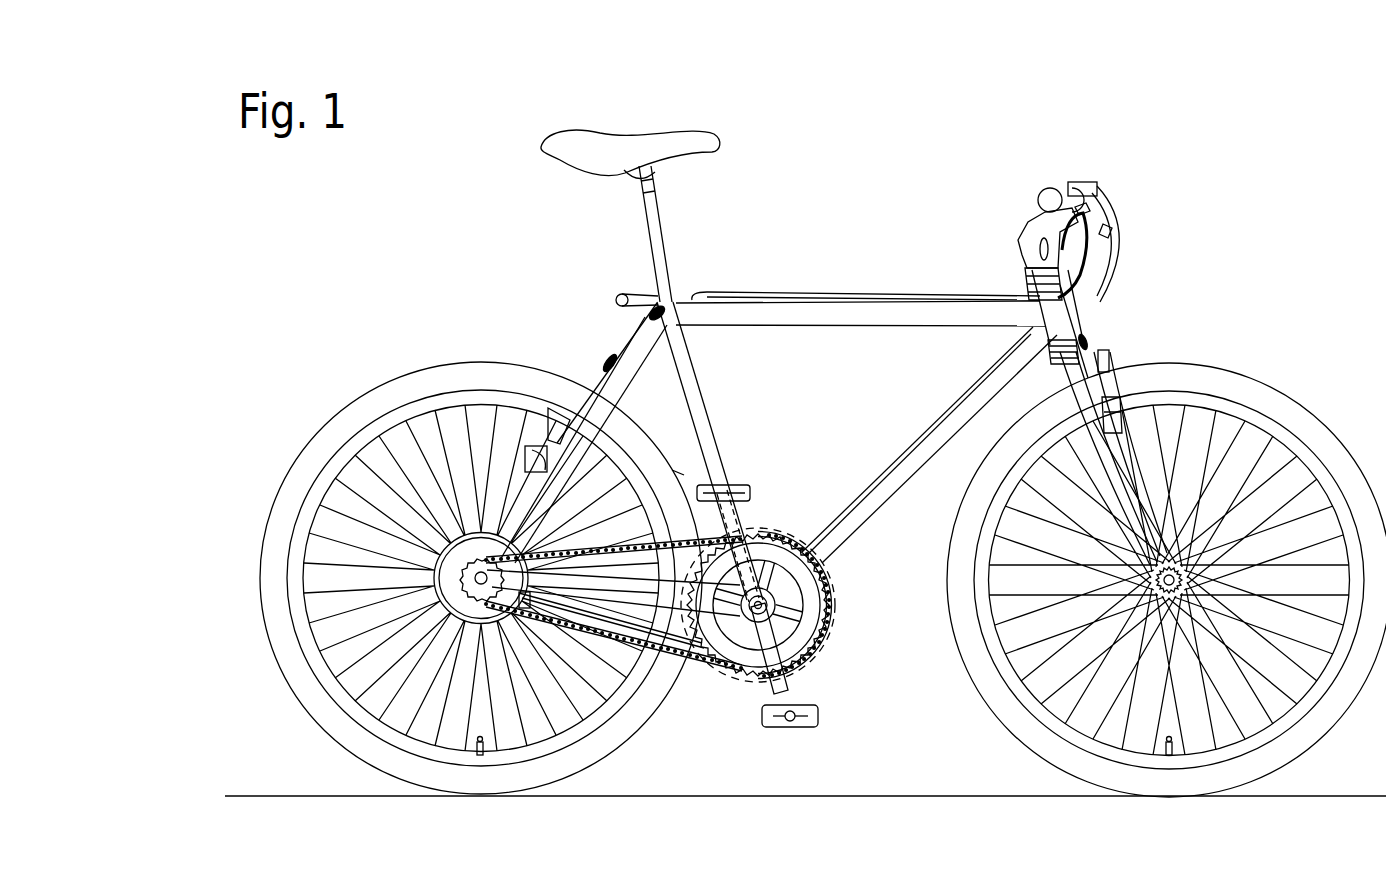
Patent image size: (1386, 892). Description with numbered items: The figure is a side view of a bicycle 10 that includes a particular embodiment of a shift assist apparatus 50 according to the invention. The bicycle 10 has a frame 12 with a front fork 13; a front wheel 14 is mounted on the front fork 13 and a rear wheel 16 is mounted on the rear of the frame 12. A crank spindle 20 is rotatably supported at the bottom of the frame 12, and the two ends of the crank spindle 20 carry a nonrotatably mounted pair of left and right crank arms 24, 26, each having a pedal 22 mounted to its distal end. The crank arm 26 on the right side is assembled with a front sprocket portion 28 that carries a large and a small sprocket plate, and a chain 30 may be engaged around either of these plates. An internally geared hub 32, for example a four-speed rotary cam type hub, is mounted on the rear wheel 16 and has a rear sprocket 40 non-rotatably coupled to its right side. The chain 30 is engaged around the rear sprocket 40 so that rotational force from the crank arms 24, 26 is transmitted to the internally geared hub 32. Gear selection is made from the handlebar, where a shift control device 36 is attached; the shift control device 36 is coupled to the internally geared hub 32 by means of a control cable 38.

The bicycle 10 is at (848, 230).
The frame 12 is at (927, 288).
The front fork 13 is at (1105, 370).
The front wheel 14 is at (1300, 415).
The rear wheel 16 is at (345, 410).
The crank spindle 20 is at (795, 552).
The pedal 22 is at (808, 717).
The left crank arm 24 is at (746, 520).
The right crank arm 26 is at (757, 674).
The front sprocket portion 28 is at (697, 672).
The chain 30 is at (676, 478).
The internally geared hub 32 is at (466, 605).
The shift control device 36 is at (1092, 185).
The control cable 38 is at (1123, 260).
The rear sprocket 40 is at (473, 533).
The shift assist apparatus 50 is at (800, 605).